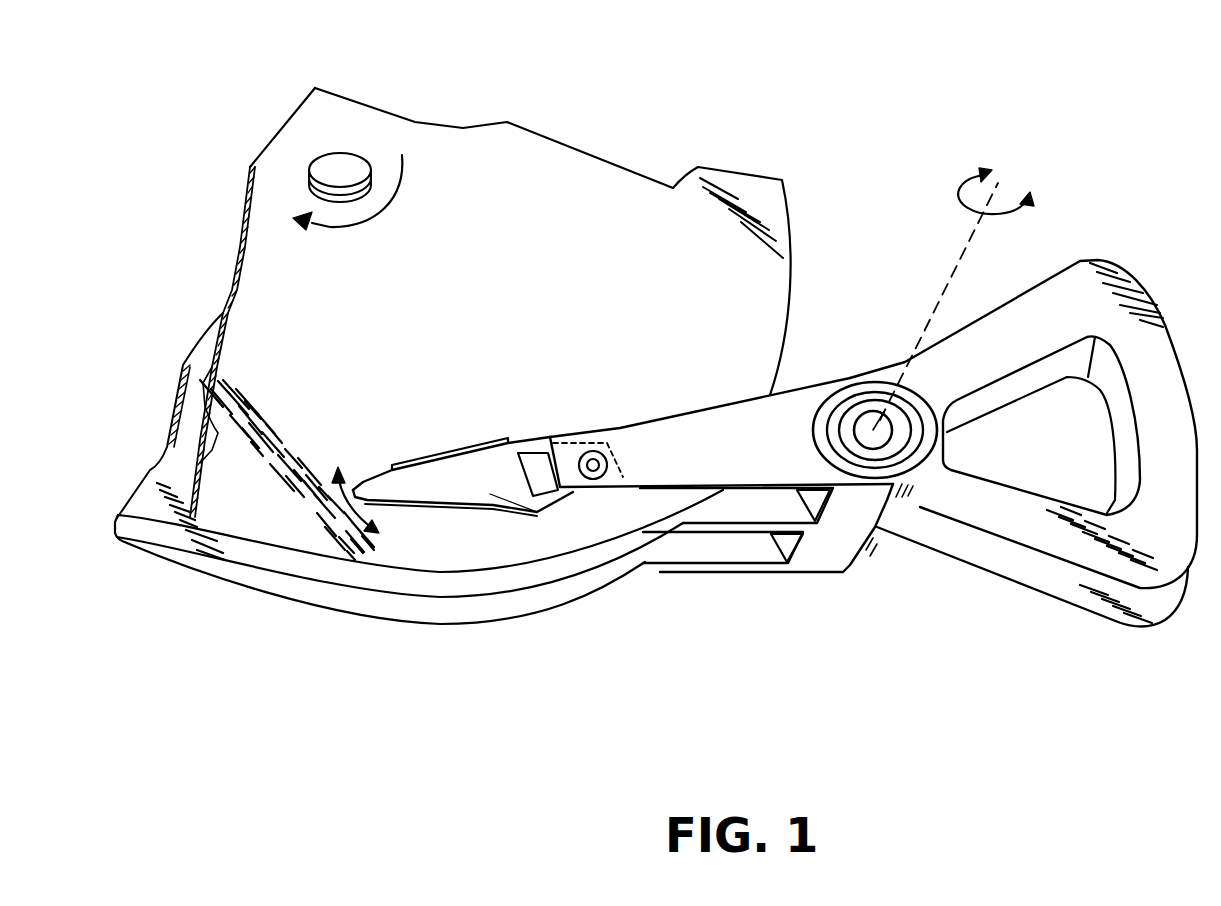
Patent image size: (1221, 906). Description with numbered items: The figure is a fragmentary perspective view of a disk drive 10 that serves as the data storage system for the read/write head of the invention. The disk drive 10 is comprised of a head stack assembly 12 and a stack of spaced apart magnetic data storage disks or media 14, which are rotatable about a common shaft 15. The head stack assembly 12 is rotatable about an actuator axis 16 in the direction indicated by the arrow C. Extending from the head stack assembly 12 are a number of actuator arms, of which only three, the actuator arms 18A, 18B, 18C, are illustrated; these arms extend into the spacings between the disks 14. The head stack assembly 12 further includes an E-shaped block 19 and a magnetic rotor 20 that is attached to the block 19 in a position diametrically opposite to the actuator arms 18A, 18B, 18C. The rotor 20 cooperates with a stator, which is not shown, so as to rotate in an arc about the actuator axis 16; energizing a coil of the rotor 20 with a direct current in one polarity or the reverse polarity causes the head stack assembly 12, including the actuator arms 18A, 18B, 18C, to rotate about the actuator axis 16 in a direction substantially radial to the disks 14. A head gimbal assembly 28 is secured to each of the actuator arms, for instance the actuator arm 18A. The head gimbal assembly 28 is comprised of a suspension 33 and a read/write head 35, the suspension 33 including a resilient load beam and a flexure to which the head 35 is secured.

The disk drive 10 is at (646, 49).
The head stack assembly 12 is at (836, 603).
The magnetic data storage disks 14 is at (538, 229).
The common shaft 15 is at (318, 167).
The actuator axis 16 is at (971, 237).
The actuator arm 18A is at (727, 403).
The actuator arm 18B is at (722, 520).
The actuator arm 18C is at (750, 563).
The E-shaped block 19 is at (846, 553).
The magnetic rotor 20 is at (1020, 573).
The head gimbal assembly 28 is at (458, 436).
The suspension 33 is at (491, 494).
The read/write head 35 is at (357, 503).
The arrow C is at (985, 176).